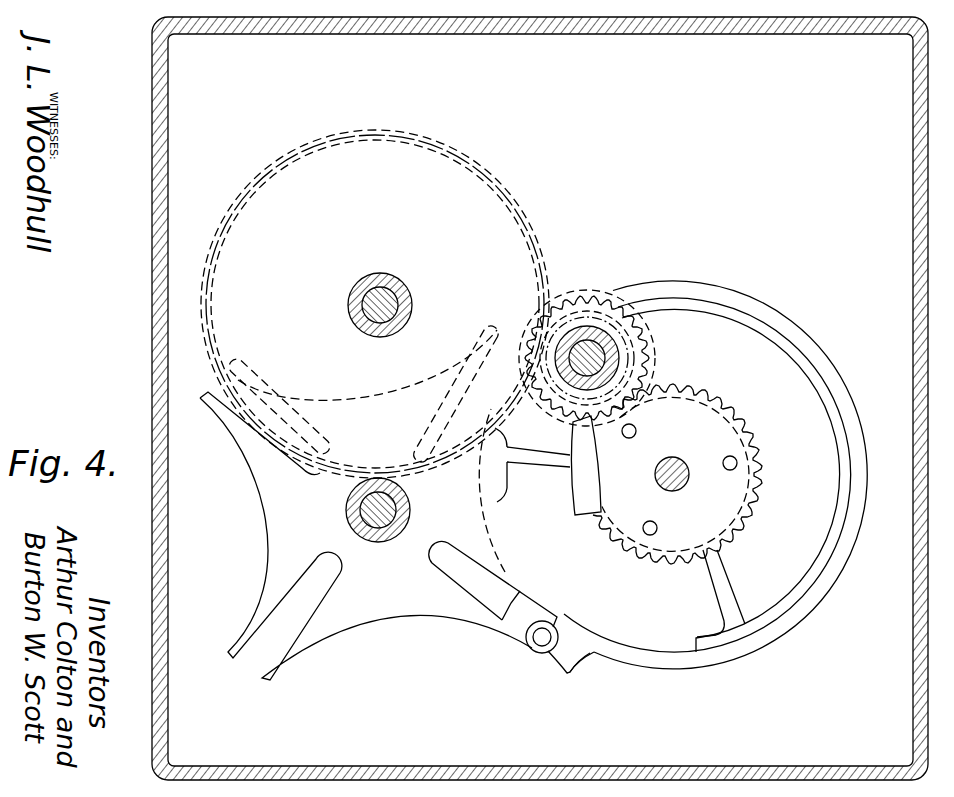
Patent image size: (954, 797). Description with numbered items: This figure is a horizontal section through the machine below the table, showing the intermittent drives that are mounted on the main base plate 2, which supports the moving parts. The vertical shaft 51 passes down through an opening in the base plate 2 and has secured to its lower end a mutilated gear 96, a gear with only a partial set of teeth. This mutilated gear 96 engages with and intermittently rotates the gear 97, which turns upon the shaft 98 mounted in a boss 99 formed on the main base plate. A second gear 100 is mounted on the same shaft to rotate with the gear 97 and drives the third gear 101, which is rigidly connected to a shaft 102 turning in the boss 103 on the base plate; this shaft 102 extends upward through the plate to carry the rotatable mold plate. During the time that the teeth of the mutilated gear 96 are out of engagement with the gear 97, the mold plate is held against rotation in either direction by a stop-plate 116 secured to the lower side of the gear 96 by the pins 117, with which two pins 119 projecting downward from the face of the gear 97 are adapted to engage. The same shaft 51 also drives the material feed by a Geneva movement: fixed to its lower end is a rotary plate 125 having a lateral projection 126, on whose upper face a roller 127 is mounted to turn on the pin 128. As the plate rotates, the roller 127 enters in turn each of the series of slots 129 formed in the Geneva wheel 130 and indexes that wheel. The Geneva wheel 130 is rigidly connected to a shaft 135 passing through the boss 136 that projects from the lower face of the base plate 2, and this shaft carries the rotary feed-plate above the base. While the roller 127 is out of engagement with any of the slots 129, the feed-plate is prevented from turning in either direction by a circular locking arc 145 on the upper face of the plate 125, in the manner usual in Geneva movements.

The main base plate 2 is at (166, 490).
The shaft 51 is at (657, 482).
The mutilated gear 96 is at (725, 425).
The gear 97 is at (647, 380).
The shaft 98 is at (600, 346).
The boss 99 is at (610, 353).
The second gear 100 is at (570, 326).
The third gear 101 is at (528, 298).
The shaft 102 is at (390, 303).
The boss 103 is at (412, 310).
The stop-plate 116 is at (578, 480).
The pins 117 is at (723, 460).
The pins 119 is at (650, 355).
The rotary plate 125 is at (808, 342).
The lateral projection 126 is at (570, 665).
The roller 127 is at (558, 637).
The pin 128 is at (542, 646).
The slots 129 is at (453, 568).
The Geneva wheel 130 is at (397, 536).
The shaft 135 is at (396, 511).
The boss 136 is at (357, 503).
The circular locking arc 145 is at (840, 430).